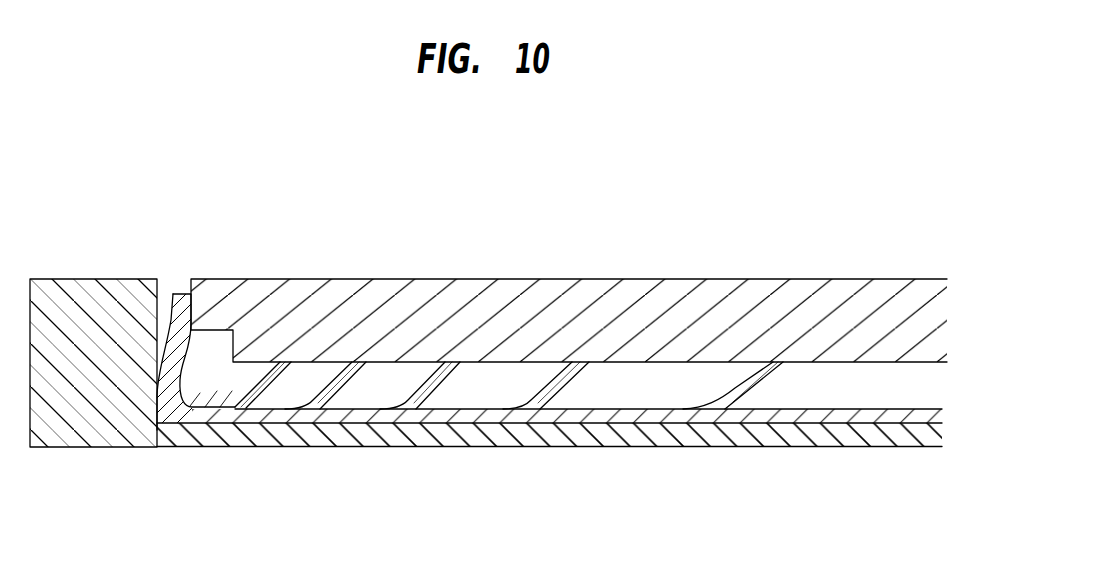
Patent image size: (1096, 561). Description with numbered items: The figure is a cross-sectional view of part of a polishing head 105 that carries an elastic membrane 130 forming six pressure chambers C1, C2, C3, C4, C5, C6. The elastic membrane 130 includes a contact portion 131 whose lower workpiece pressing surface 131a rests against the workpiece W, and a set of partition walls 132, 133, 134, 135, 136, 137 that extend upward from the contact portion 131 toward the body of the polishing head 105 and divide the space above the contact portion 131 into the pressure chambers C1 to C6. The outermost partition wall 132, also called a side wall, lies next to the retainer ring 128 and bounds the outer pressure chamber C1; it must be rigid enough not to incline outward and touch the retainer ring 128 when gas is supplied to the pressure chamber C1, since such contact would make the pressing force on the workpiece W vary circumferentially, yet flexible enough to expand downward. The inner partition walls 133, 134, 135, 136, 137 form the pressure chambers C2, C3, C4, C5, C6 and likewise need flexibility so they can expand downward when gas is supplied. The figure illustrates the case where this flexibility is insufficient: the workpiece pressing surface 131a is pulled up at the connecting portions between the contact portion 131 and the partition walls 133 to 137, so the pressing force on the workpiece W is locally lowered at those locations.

The polishing head 105 is at (335, 255).
The retainer ring 128 is at (79, 302).
The elastic membrane 130 is at (549, 384).
The contact portion 131 is at (828, 418).
The workpiece pressing surface 131a is at (667, 427).
The partition wall 132 is at (174, 290).
The partition wall 133 is at (265, 385).
The partition wall 134 is at (350, 372).
The partition wall 135 is at (440, 375).
The partition wall 136 is at (555, 385).
The partition wall 137 is at (760, 383).
The workpiece W is at (591, 448).
The pressure chamber C1 is at (203, 393).
The pressure chamber C2 is at (300, 393).
The pressure chamber C3 is at (398, 393).
The pressure chamber C4 is at (490, 393).
The pressure chamber C5 is at (627, 392).
The pressure chamber C6 is at (890, 395).